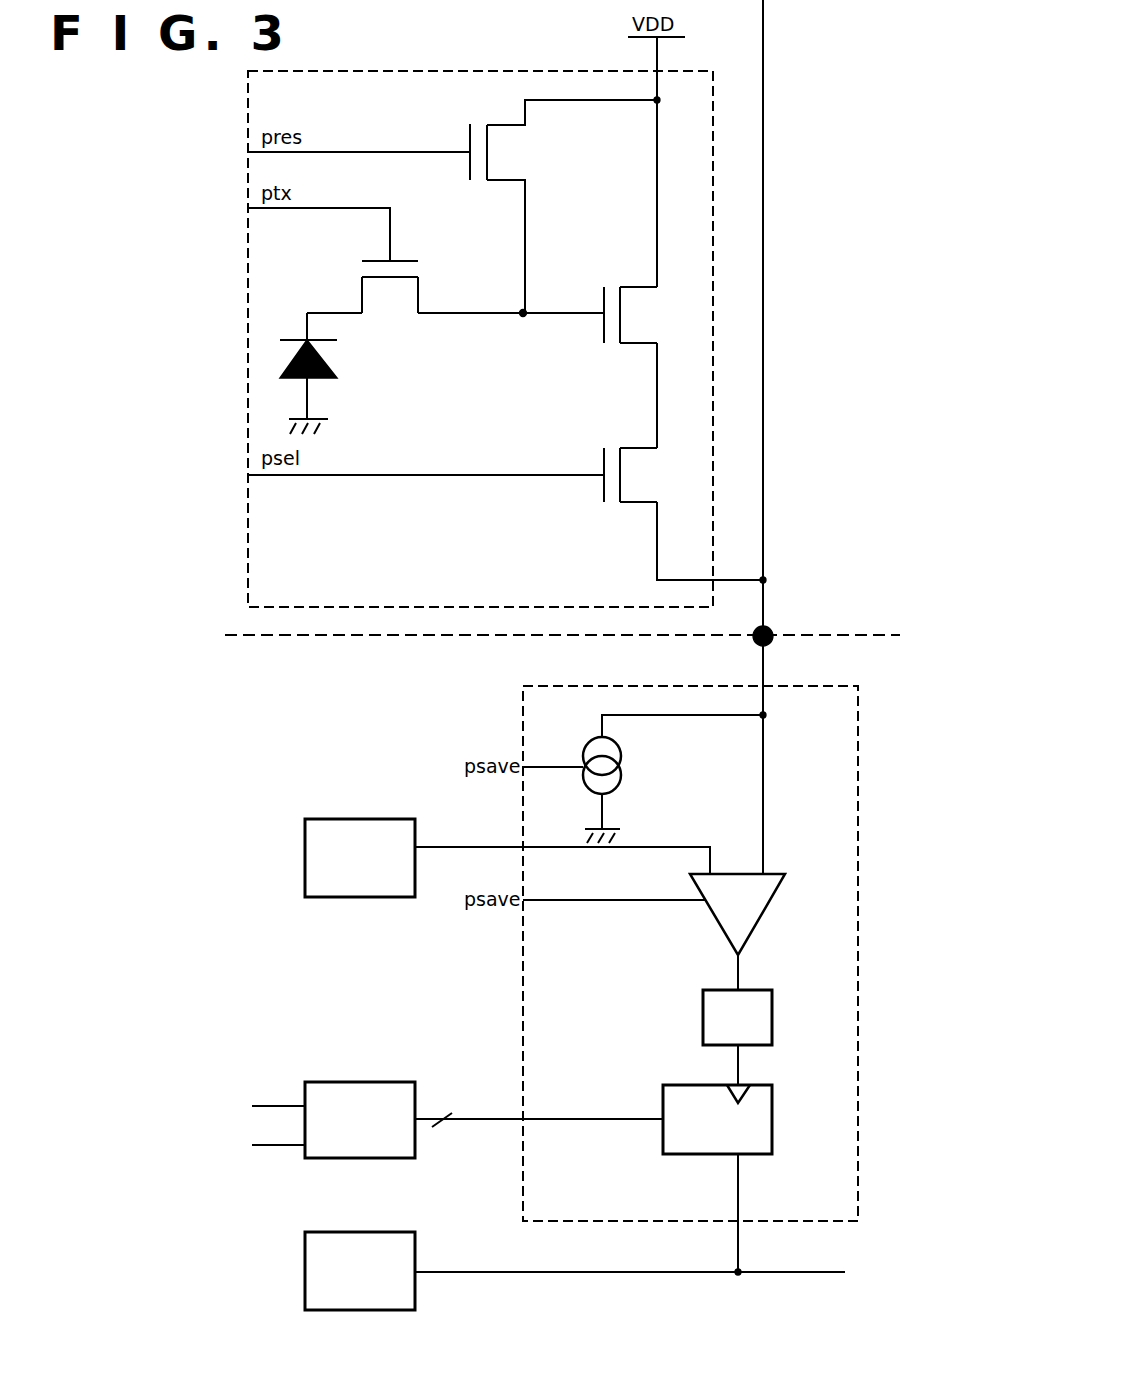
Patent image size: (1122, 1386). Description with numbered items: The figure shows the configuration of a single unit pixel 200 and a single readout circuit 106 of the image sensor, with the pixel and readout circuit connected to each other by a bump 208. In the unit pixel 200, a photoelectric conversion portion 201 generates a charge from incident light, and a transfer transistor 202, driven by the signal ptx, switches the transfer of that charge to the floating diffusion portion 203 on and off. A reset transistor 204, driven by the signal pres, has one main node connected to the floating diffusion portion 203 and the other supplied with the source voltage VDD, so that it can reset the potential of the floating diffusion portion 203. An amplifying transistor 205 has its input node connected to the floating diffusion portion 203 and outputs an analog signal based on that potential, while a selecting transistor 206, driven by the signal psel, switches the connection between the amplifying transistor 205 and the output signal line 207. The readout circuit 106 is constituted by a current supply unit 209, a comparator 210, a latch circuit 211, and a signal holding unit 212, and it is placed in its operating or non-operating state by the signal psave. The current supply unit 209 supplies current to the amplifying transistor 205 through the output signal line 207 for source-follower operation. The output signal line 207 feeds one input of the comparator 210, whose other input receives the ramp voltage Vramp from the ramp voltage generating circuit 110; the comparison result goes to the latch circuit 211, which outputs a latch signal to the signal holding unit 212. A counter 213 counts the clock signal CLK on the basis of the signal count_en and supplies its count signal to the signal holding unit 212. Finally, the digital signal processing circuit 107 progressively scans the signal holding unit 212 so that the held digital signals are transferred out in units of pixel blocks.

The unit pixel 200 is at (347, 71).
The photoelectric conversion portion 201 is at (293, 338).
The transfer transistor 202 is at (390, 297).
The floating diffusion portion 203 is at (523, 318).
The reset transistor 204 is at (506, 150).
The amplifying transistor 205 is at (600, 335).
The selecting transistor 206 is at (601, 455).
The output signal line 207 is at (766, 381).
The bump 208 is at (770, 630).
The current supply unit 209 is at (622, 750).
The comparator 210 is at (762, 918).
The latch circuit 211 is at (776, 1010).
The signal holding unit 212 is at (776, 1105).
The counter 213 is at (345, 1082).
The readout circuit 106 is at (518, 694).
The digital signal processing circuit 107 is at (345, 1232).
The ramp voltage generating circuit 110 is at (345, 819).